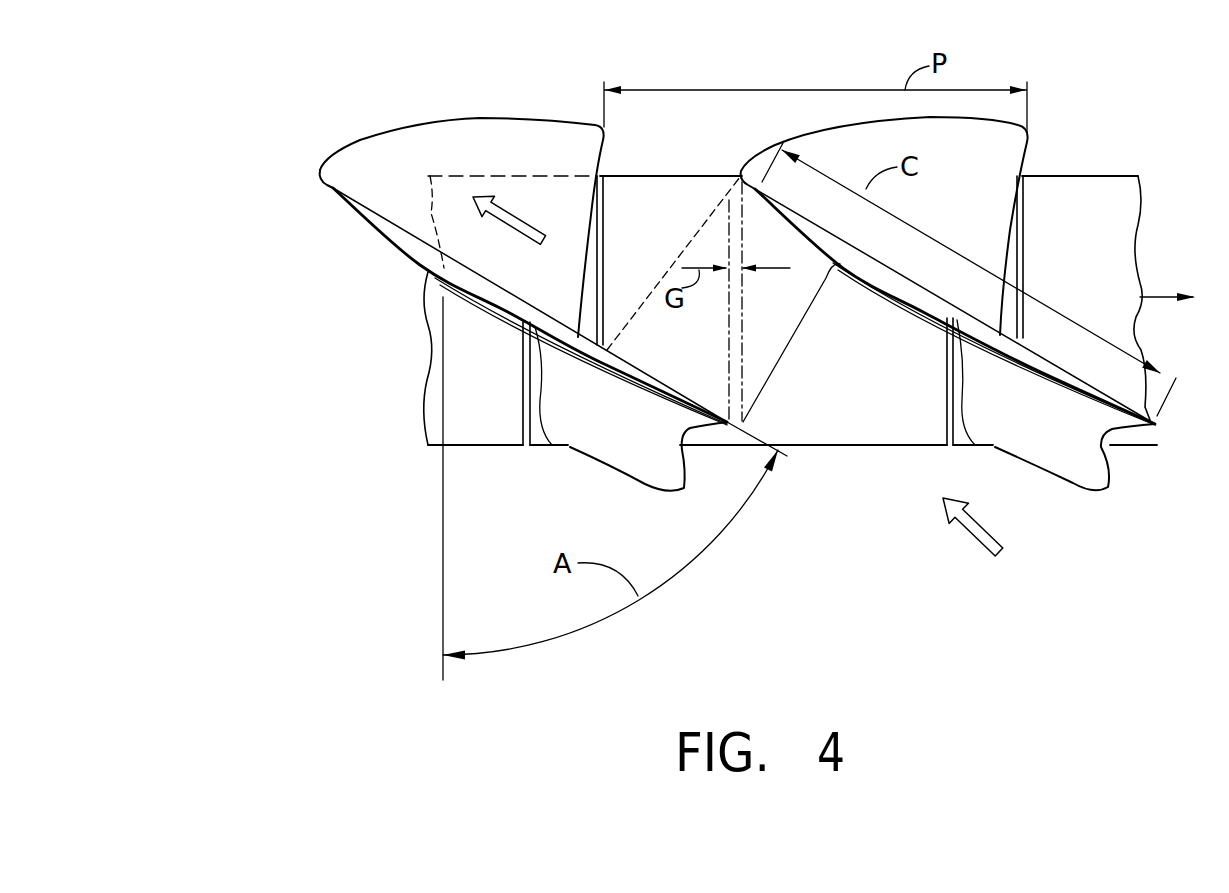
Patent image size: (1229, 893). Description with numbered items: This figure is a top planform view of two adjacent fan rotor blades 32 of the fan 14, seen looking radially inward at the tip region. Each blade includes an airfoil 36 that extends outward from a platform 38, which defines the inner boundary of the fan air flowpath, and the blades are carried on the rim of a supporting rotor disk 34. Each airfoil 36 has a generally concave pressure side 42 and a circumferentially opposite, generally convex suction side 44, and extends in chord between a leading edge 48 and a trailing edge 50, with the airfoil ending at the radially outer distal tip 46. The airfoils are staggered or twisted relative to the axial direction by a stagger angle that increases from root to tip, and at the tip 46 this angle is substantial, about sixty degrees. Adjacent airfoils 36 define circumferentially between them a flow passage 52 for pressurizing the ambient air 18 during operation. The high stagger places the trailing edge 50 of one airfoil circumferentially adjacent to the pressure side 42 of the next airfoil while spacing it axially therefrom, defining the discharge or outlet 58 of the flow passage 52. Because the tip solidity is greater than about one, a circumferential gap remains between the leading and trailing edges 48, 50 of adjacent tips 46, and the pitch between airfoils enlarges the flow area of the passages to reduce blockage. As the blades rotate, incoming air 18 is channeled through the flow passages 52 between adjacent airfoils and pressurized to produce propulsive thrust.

The fan 14 is at (308, 380).
The ambient air 18 is at (990, 528).
The fan rotor blade 32 is at (357, 140).
The rotor disk 34 is at (1145, 226).
The airfoil 36 is at (587, 358).
The platform 38 is at (602, 203).
The pressure side 42 is at (969, 204).
The suction side 44 is at (1038, 414).
The tip 46 is at (417, 250).
The leading edge 48 is at (668, 490).
The trailing edge 50 is at (470, 120).
The flow passage 52 is at (788, 350).
The outlet 58 is at (703, 223).